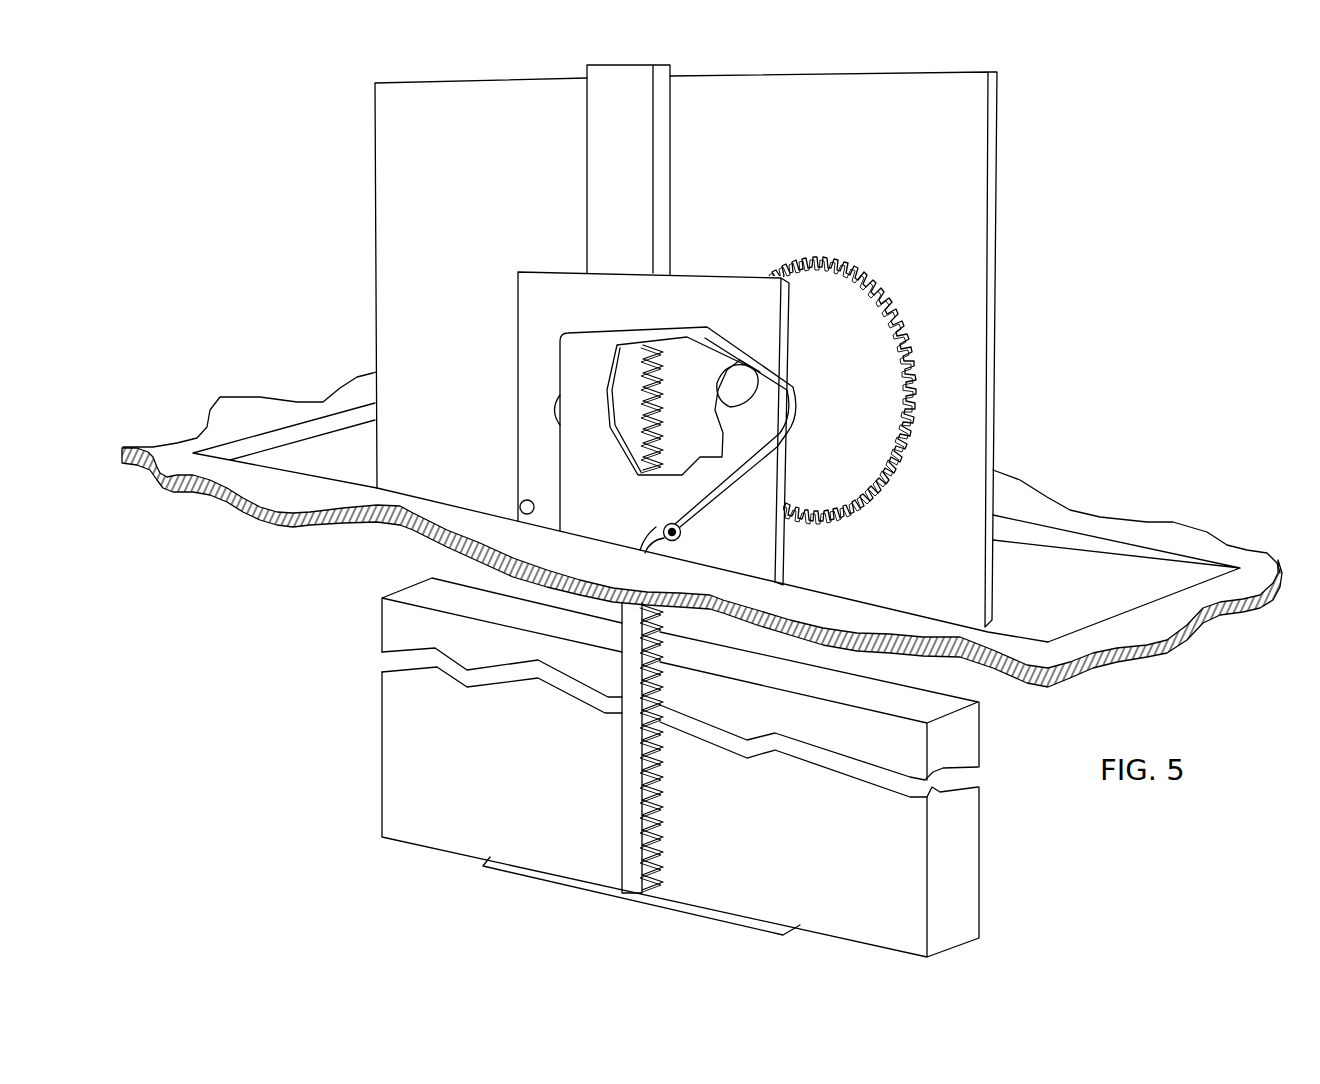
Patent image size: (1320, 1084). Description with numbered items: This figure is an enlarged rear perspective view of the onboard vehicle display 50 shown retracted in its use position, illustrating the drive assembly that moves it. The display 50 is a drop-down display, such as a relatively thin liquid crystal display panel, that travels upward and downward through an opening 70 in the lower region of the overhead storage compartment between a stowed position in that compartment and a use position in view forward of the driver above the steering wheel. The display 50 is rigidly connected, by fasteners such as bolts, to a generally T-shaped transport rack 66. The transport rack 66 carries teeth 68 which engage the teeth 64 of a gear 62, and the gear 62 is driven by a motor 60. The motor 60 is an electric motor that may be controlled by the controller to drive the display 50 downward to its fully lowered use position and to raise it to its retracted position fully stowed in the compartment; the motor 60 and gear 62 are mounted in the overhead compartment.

The onboard vehicle display 50 is at (368, 711).
The motor 60 is at (572, 363).
The gear 62 is at (857, 477).
The teeth 64 is at (647, 477).
The transport rack 66 is at (632, 763).
The teeth 68 is at (648, 420).
The opening 70 is at (1060, 567).